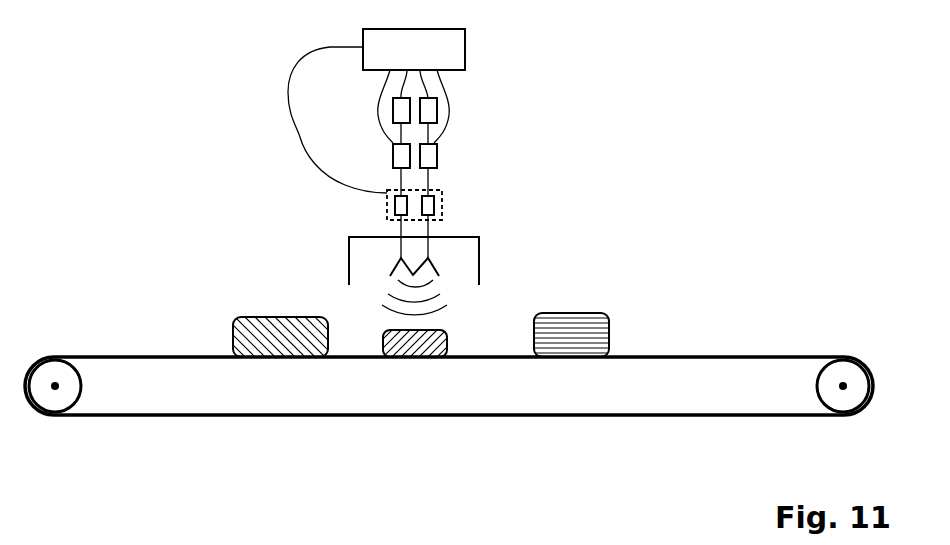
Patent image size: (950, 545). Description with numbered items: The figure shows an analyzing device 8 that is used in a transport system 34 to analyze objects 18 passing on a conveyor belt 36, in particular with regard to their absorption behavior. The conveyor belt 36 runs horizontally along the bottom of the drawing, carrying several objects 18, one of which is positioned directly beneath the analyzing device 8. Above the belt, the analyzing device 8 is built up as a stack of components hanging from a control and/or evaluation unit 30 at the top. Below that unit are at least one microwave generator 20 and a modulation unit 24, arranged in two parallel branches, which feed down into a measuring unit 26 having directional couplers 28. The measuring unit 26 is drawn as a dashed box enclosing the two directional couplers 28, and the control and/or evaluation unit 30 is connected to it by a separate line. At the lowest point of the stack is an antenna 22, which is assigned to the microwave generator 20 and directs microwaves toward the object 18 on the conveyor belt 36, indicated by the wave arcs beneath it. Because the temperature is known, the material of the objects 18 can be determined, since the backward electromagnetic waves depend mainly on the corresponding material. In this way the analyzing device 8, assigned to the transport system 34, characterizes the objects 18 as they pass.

The analyzing device 8 is at (566, 94).
The objects 18 is at (268, 320).
The microwave generator 20 is at (393, 112).
The antenna 22 is at (400, 262).
The modulation unit 24 is at (393, 160).
The measuring unit 26 is at (442, 200).
The directional couplers 28 is at (395, 206).
The control and/or evaluation unit 30 is at (465, 50).
The transport system 34 is at (230, 162).
The conveyor belt 36 is at (143, 357).